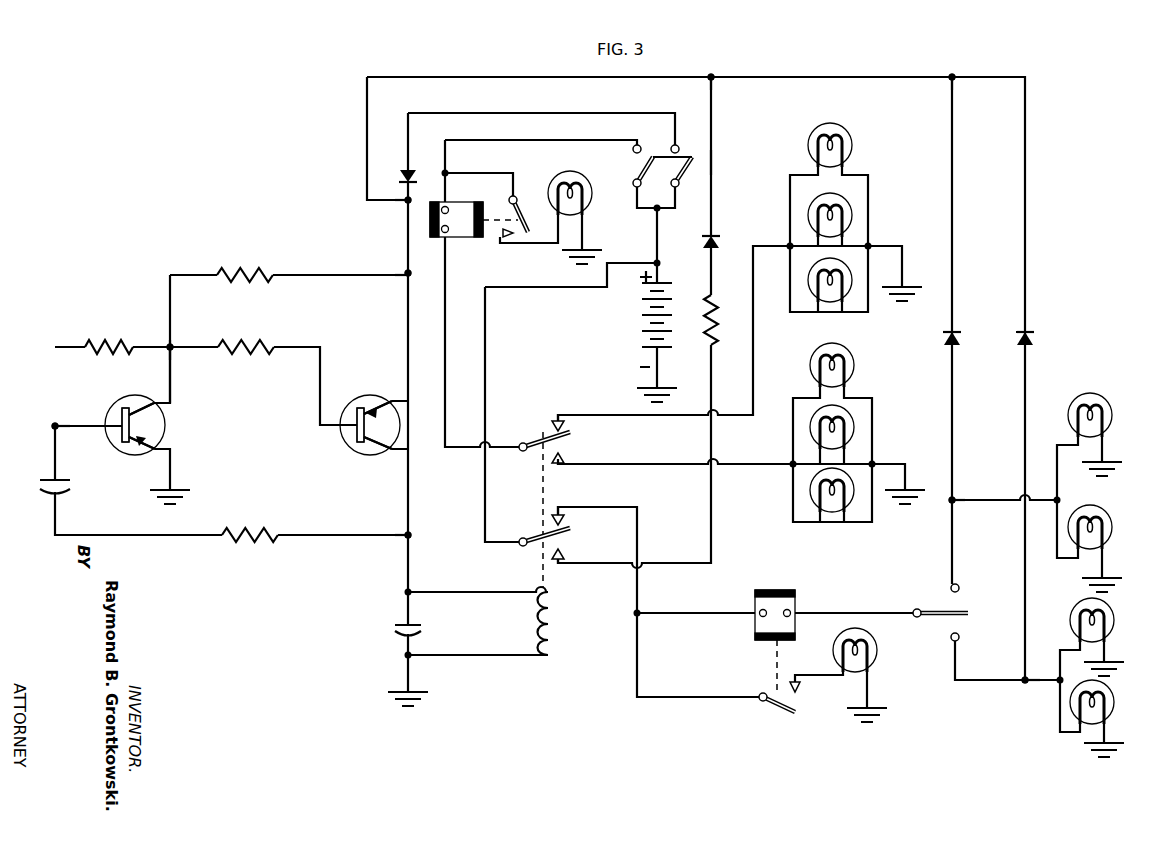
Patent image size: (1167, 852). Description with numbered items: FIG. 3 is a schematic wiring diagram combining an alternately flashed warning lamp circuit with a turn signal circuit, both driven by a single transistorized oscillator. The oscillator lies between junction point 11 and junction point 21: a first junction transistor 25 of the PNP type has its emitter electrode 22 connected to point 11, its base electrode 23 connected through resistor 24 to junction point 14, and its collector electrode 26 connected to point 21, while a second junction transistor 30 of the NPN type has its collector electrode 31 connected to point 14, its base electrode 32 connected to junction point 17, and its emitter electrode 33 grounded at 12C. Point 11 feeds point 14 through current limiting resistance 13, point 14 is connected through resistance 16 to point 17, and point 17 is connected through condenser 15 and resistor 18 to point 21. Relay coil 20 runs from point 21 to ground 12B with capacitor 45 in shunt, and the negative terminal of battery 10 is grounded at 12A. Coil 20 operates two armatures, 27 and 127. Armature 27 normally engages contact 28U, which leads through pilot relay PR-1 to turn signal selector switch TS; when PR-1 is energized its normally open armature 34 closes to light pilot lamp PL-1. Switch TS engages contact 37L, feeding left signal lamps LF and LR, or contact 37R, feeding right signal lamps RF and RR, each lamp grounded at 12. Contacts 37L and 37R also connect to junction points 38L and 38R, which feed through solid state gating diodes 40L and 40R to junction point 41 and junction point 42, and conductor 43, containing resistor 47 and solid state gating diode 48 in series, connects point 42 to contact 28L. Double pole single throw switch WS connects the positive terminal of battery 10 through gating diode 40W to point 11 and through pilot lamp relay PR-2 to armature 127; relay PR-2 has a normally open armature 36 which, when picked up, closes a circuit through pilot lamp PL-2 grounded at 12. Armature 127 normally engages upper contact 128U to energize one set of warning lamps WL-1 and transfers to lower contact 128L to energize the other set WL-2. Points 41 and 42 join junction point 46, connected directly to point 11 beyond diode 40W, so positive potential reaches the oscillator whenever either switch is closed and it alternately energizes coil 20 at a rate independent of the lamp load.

The battery 10 is at (640, 300).
The junction point 11 is at (405, 271).
The ground 12 is at (588, 249).
The ground 12A is at (655, 388).
The ground 12B is at (405, 690).
The ground 12C is at (173, 489).
The current limiting resistance 13 is at (224, 273).
The junction point 14 is at (168, 345).
The condenser 15 is at (42, 484).
The resistance 16 is at (97, 343).
The junction point 17 is at (52, 425).
The resistor 18 is at (250, 541).
The relay coil 20 is at (554, 628).
The junction point 21 is at (405, 538).
The emitter electrode 22 is at (369, 406).
The base electrode 23 is at (346, 438).
The resistor 24 is at (240, 346).
The first junction transistor 25 is at (424, 435).
The collector electrode 26 is at (372, 448).
The armature 27 is at (540, 537).
The contact 28U is at (566, 520).
The contact 28L is at (566, 553).
The second junction transistor 30 is at (194, 433).
The collector electrode 31 is at (148, 405).
The base electrode 32 is at (122, 414).
The emitter electrode 33 is at (145, 449).
The armature 34 is at (776, 705).
The armature 36 is at (521, 208).
The contact 37L is at (959, 586).
The contact 37R is at (960, 637).
The junction point 38L is at (955, 498).
The junction point 38R is at (1026, 684).
The solid state gating diode 40W is at (404, 170).
The solid state gating diode 40L is at (946, 338).
The solid state gating diode 40R is at (1033, 338).
The junction point 41 is at (950, 75).
The junction point 42 is at (712, 75).
The conductor 43 is at (713, 160).
The capacitor 45 is at (393, 628).
The junction point 46 is at (404, 203).
The resistor 47 is at (716, 335).
The solid state gating diode 48 is at (706, 241).
The armature 127 is at (541, 442).
The upper contact 128U is at (568, 426).
The lower contact 128L is at (566, 456).
The pilot relay PR-1 is at (770, 603).
The pilot lamp relay PR-2 is at (456, 234).
The pilot lamp PL-1 is at (870, 634).
The pilot lamp PL-2 is at (558, 178).
The turn signal selector switch TS is at (940, 610).
The double pole single throw switch WS is at (680, 185).
The warning lamps WL-1 is at (845, 135).
The warning lamps WL-2 is at (845, 352).
The left front signal lamp LF is at (1098, 398).
The left rear signal lamp LR is at (1098, 508).
The right front signal lamp RF is at (1100, 605).
The right rear signal lamp RR is at (1105, 690).